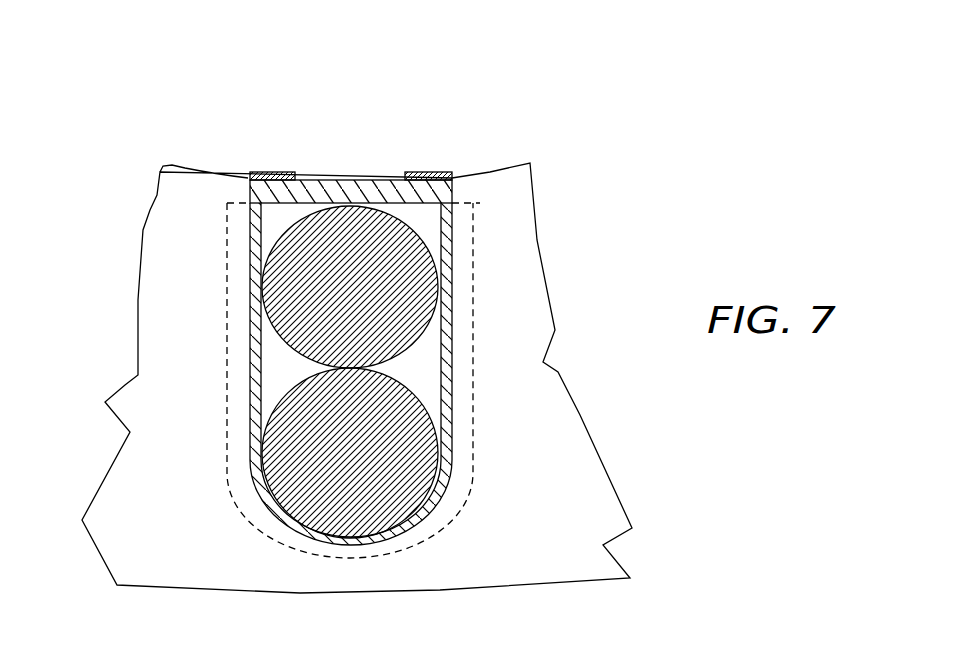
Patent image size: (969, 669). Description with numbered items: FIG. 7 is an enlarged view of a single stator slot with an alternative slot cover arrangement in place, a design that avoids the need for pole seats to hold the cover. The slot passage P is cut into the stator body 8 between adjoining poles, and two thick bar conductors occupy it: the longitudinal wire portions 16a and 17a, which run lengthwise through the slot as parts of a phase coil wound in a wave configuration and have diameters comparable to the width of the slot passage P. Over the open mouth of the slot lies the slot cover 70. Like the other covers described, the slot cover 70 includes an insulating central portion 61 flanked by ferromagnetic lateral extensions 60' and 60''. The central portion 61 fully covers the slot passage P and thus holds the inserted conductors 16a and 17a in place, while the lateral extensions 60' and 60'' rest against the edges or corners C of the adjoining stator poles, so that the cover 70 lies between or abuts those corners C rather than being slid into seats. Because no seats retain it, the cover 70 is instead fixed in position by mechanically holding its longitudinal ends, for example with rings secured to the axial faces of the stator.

The connector body 8 is at (568, 88).
The slot cover 70 is at (302, 311).
The central portion 61 is at (316, 180).
The lateral extension 60' is at (274, 129).
The lateral extension 60'' is at (422, 121).
The corner of stator pole C is at (191, 193).
The slot passage P is at (262, 231).
The longitudinal wire portion 16a is at (445, 270).
The longitudinal wire portion 17a is at (442, 476).